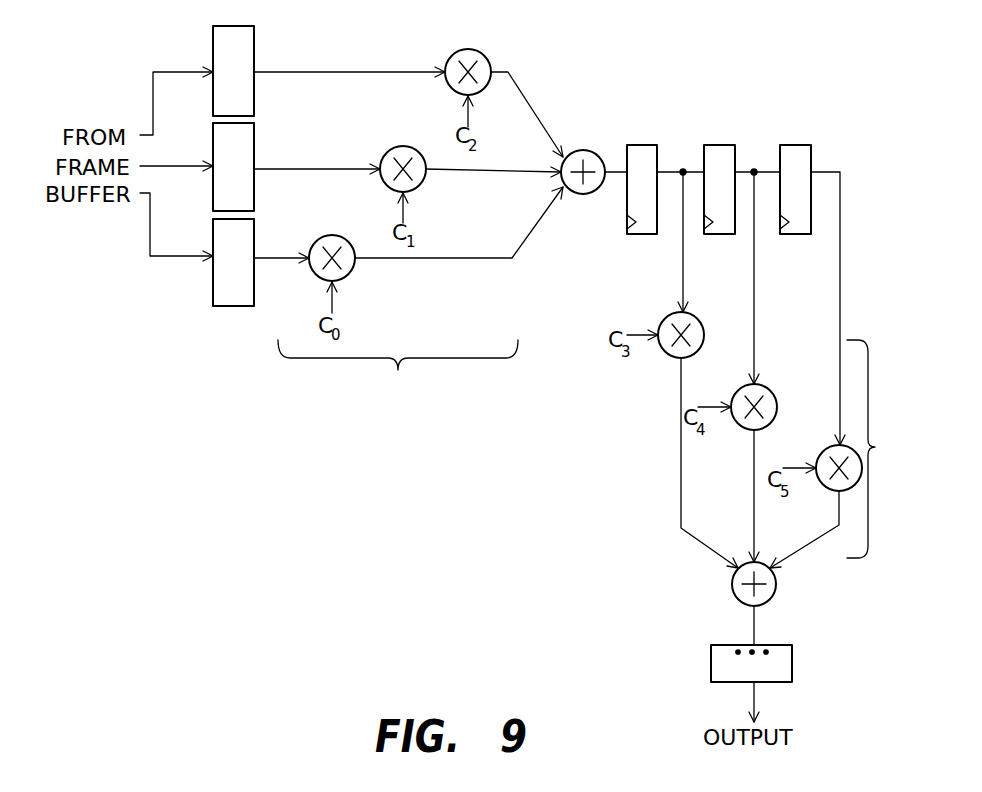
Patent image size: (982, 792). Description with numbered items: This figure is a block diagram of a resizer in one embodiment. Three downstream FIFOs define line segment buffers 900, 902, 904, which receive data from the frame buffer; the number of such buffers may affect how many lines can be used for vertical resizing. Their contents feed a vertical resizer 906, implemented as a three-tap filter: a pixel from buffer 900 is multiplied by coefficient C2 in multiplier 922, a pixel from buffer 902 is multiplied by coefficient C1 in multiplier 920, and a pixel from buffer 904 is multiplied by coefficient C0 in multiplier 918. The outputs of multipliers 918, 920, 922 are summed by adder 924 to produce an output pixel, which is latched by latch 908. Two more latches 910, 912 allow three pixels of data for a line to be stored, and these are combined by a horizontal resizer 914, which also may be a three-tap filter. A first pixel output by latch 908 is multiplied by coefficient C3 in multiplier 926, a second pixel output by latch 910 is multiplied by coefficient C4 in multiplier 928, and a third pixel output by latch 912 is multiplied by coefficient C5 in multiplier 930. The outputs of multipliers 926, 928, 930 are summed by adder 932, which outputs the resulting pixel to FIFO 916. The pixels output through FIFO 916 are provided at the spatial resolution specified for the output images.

The line segment buffer 900 is at (255, 45).
The line segment buffer 902 is at (255, 148).
The line segment buffer 904 is at (213, 273).
The vertical resizer 906 is at (398, 376).
The latch 908 is at (641, 145).
The latch 910 is at (720, 145).
The latch 912 is at (789, 234).
The horizontal resizer 914 is at (876, 447).
The FIFO 916 is at (777, 645).
The multiplier 918 is at (353, 270).
The multiplier 920 is at (425, 180).
The multiplier 922 is at (485, 53).
The adder 924 is at (583, 195).
The multiplier 926 is at (672, 355).
The multiplier 928 is at (772, 387).
The multiplier 930 is at (820, 484).
The adder 932 is at (737, 600).